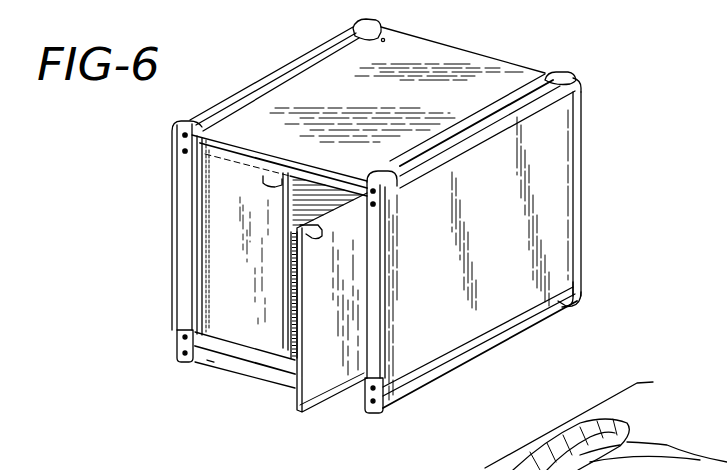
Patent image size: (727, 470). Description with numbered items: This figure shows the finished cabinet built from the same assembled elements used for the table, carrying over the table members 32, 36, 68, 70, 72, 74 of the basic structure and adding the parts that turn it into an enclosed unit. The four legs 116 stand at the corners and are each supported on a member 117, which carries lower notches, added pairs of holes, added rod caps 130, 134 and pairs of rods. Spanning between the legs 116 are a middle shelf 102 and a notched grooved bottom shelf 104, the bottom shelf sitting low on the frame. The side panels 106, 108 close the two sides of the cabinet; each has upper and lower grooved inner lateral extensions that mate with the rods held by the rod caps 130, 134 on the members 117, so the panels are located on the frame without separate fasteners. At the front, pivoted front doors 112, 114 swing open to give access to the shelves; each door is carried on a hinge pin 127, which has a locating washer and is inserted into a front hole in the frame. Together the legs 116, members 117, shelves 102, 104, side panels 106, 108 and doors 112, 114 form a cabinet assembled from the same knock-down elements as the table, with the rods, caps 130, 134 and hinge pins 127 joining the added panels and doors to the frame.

The top right frame rail 32 is at (488, 118).
The top left frame rail 36 is at (270, 82).
The fastener 68 is at (378, 193).
The fastener 70 is at (378, 205).
The fastener 72 is at (182, 134).
The fastener 74 is at (183, 152).
The middle shelf 102 is at (317, 210).
The notched grooved bottom shelf 104 is at (482, 66).
The side panel 106 is at (172, 212).
The side panel 108 is at (572, 177).
The pivoted front door 112 is at (268, 342).
The pivoted front door 114 is at (322, 395).
The leg 116 is at (353, 25).
The member 117 is at (180, 354).
The hinge pin 127 is at (232, 123).
The rod cap 130 is at (381, 405).
The rod cap 134 is at (178, 338).